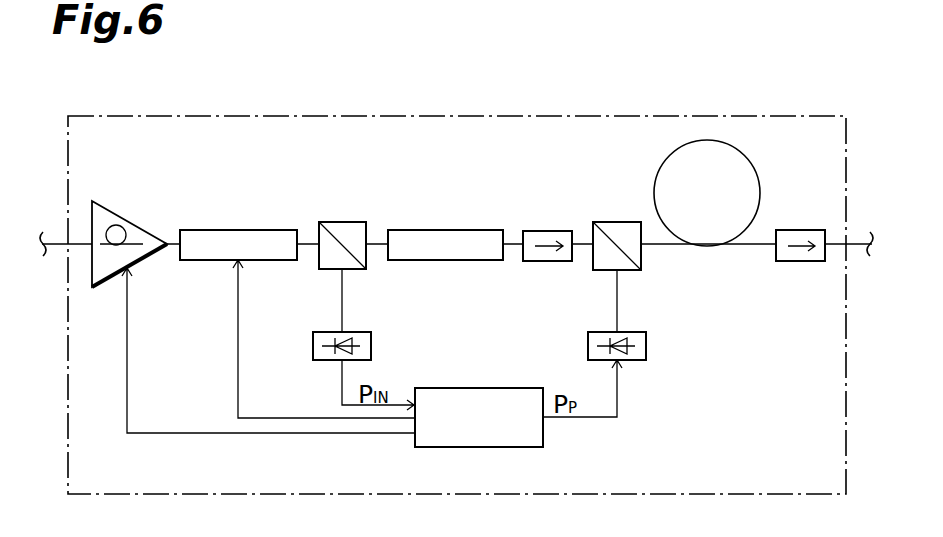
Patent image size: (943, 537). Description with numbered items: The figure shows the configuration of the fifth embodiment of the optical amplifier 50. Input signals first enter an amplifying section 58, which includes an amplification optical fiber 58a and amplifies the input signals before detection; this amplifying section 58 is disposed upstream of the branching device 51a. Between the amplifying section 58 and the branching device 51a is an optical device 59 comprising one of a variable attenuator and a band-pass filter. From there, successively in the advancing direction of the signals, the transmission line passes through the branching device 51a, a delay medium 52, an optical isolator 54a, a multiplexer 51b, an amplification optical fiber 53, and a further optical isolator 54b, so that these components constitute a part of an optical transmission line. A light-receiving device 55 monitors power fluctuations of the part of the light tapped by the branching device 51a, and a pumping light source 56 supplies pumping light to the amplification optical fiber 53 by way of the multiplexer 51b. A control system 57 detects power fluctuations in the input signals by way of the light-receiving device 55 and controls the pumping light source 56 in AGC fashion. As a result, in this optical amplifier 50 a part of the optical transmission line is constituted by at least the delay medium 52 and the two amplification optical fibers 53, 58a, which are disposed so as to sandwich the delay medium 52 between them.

The optical amplifier 50 is at (770, 117).
The branching device 51a is at (336, 222).
The multiplexer 51b is at (615, 222).
The delay medium 52 is at (434, 230).
The amplification optical fiber 53 is at (753, 167).
The optical isolator 54a is at (545, 231).
The optical isolator 54b is at (798, 230).
The light-receiving device 55 is at (371, 345).
The pumping light source 56 is at (646, 345).
The control system 57 is at (477, 388).
The amplifying section 58 is at (127, 220).
The amplification optical fiber 58a is at (130, 246).
The optical device 59 is at (228, 230).